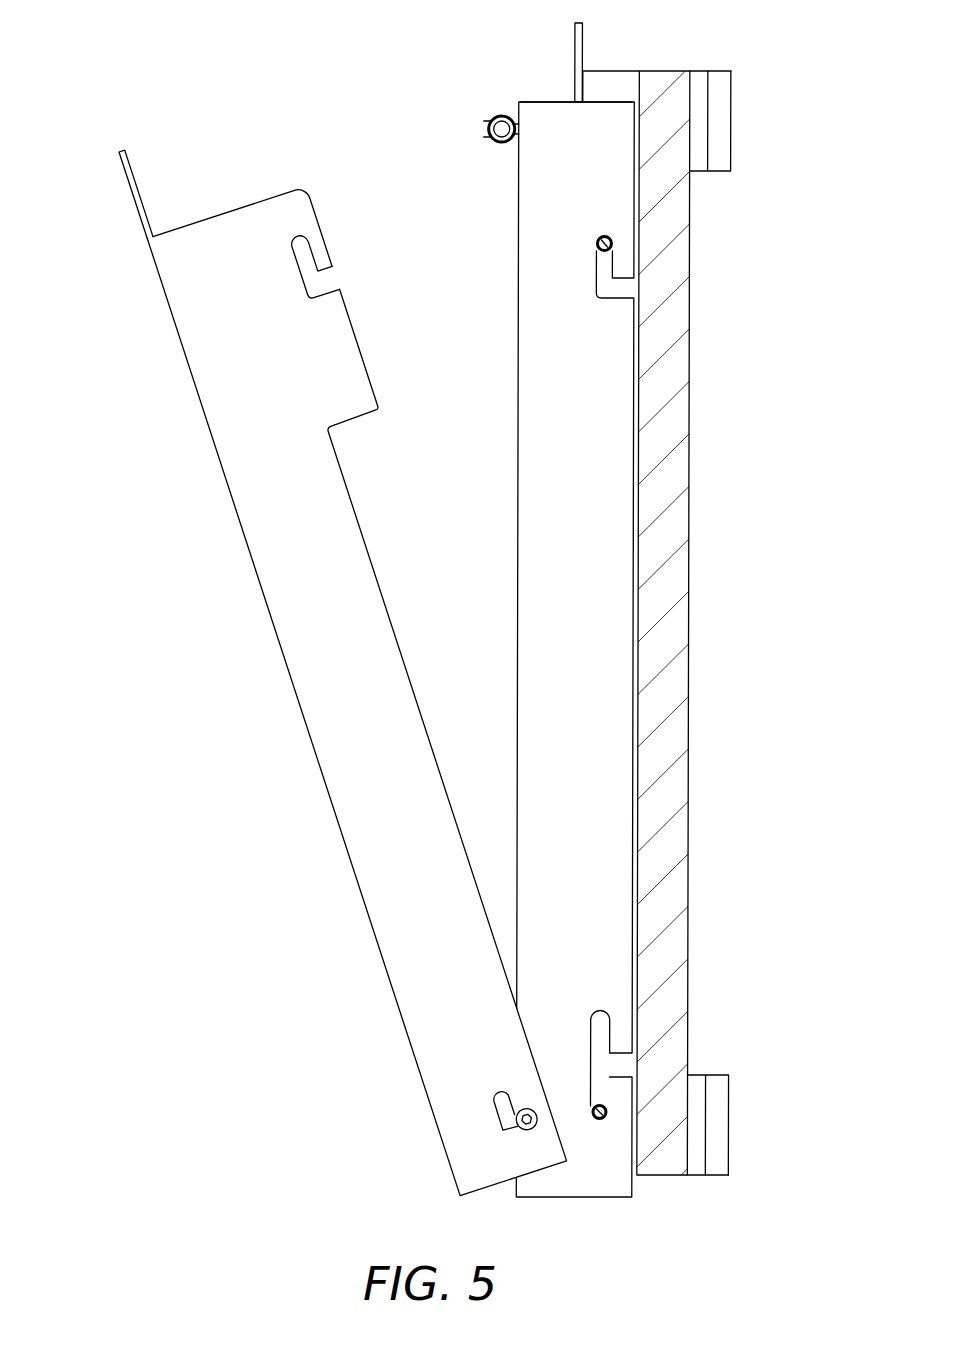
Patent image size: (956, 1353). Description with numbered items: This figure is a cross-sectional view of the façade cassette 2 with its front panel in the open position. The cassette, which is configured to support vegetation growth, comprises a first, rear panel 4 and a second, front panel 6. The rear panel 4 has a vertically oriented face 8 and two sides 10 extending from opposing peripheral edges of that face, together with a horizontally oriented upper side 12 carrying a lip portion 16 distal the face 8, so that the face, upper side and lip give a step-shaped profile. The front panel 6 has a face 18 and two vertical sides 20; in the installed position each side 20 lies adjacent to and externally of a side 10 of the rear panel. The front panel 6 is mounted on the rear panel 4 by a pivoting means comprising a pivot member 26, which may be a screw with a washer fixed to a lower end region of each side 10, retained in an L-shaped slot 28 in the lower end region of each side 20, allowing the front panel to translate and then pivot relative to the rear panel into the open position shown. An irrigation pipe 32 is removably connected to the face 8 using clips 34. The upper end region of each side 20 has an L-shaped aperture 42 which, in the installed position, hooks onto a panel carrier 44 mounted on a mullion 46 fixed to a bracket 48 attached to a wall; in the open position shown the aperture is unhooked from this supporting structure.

The façade cassette 2 is at (217, 52).
The rear panel 4 is at (689, 643).
The front panel 6 is at (343, 673).
The face 8 is at (518, 644).
The side 10 is at (600, 742).
The upper side 12 is at (542, 101).
The lip portion 16 is at (583, 38).
The face 18 is at (136, 194).
The side 20 is at (383, 691).
The pivot member 26 is at (504, 1110).
The slot 28 is at (526, 1119).
The pipe 32 is at (462, 100).
The clip 34 is at (502, 114).
The L-shaped aperture 42 is at (314, 264).
The panel carrier 44 is at (597, 243).
The mullion 46 is at (690, 893).
The bracket 48 is at (733, 79).